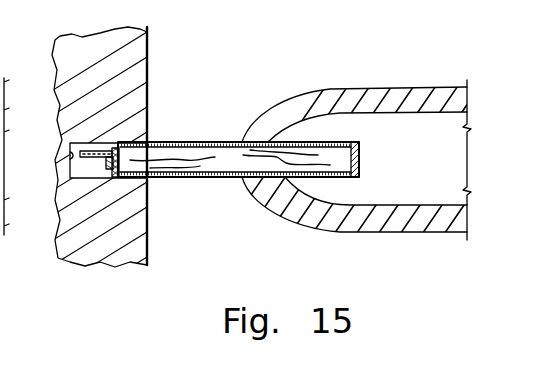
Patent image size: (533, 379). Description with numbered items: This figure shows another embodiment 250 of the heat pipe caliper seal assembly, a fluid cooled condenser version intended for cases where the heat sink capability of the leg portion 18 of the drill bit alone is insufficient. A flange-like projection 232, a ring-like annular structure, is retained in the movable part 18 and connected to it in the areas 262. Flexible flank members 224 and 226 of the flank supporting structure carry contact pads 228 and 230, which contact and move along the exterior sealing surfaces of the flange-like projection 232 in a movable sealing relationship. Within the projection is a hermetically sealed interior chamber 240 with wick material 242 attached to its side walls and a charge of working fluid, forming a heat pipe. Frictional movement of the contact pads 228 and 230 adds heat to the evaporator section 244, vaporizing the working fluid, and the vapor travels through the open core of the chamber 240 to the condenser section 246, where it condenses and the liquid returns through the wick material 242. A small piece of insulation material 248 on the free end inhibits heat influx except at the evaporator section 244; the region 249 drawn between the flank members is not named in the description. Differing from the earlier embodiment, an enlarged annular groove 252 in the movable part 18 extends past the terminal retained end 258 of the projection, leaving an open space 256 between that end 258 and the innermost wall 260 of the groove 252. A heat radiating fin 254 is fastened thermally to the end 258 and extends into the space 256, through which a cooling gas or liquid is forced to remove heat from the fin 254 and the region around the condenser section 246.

The leg portion 18 is at (148, 33).
The flexible flank member 224 is at (390, 228).
The flexible flank member 226 is at (437, 90).
The contact pad 228 is at (292, 180).
The contact pad 230 is at (279, 103).
The flange-like projection 232 is at (208, 142).
The interior chamber 240 is at (208, 178).
The wick material 242 is at (221, 150).
The evaporator section 244 is at (340, 189).
The condenser section 246 is at (160, 142).
The insulation material 248 is at (360, 153).
The chamber 249 is at (430, 141).
The heat pipe caliper seal assembly embodiment 250 is at (237, 194).
The annular groove 252 is at (77, 135).
The heat radiating fin 254 is at (59, 206).
The open space 256 is at (78, 165).
The terminal retained end 258 is at (117, 170).
The innermost wall 260 is at (73, 154).
The connection areas 262 is at (147, 113).